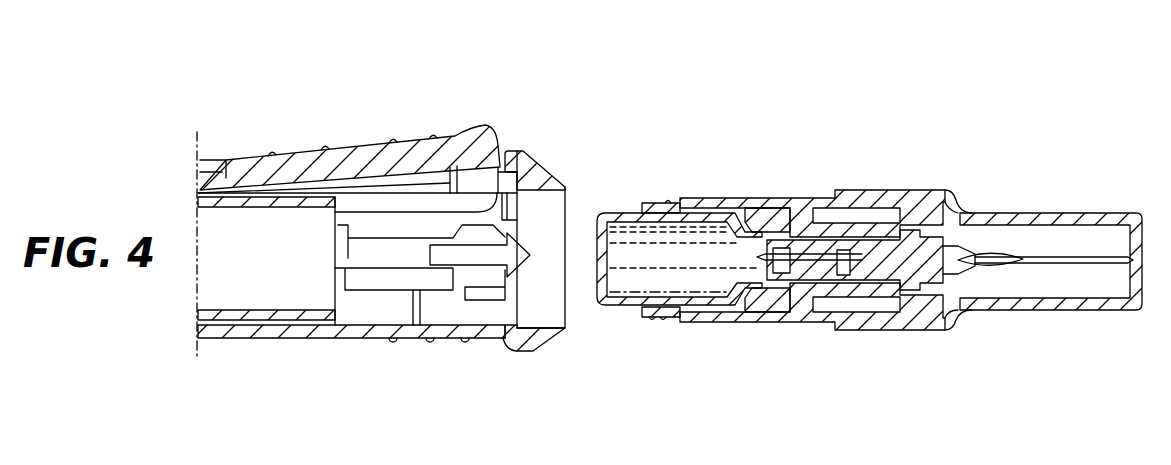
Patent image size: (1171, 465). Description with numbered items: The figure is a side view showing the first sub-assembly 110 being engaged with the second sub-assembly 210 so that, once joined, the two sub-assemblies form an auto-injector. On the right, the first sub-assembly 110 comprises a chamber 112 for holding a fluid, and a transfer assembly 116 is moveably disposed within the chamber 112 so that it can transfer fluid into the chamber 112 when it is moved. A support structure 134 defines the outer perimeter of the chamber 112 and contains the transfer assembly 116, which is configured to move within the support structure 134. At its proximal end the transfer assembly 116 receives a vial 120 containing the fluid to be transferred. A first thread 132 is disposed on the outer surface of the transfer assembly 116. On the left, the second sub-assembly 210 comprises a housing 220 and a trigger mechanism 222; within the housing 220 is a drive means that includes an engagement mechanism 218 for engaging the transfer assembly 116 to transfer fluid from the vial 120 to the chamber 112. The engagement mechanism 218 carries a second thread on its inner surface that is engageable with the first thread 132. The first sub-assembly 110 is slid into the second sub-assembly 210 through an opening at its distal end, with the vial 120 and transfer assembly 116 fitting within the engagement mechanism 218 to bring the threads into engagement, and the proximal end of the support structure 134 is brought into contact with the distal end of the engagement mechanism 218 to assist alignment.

The second sub-assembly 210 is at (547, 116).
The trigger mechanism 222 is at (337, 157).
The engagement mechanism 218 is at (310, 319).
The housing 220 is at (521, 353).
The first sub-assembly 110 is at (903, 129).
The chamber 112 is at (873, 287).
The transfer assembly 116 is at (770, 313).
The vial 120 is at (627, 307).
The first thread 132 is at (661, 203).
The support structure 134 is at (762, 198).